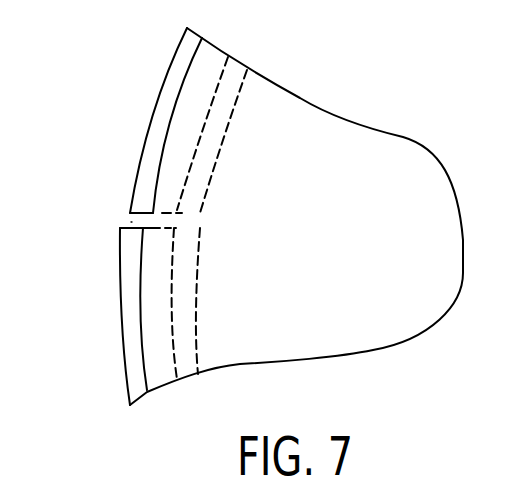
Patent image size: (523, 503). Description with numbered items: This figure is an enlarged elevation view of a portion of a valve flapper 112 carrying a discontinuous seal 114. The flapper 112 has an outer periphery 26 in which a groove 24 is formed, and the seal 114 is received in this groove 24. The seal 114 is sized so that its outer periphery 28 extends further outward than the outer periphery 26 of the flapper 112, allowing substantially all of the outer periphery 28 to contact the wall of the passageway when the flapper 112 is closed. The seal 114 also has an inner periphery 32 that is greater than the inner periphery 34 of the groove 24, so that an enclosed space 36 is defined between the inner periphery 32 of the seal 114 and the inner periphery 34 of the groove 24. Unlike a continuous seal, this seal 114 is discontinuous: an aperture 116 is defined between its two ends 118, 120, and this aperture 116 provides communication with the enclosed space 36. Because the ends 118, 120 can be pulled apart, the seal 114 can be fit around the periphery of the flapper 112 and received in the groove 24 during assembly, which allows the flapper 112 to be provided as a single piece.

The flapper 112 is at (387, 254).
The seal 114 is at (156, 99).
The end of the seal 118 is at (128, 213).
The aperture 116 is at (131, 222).
The end of the seal 120 is at (120, 228).
The outer periphery of the seal 28 is at (121, 353).
The outer periphery of the flapper 26 is at (128, 390).
The groove 24 is at (217, 173).
The enclosed space 36 is at (198, 213).
The inner periphery of the seal 32 is at (172, 283).
The inner periphery of the groove 34 is at (197, 315).